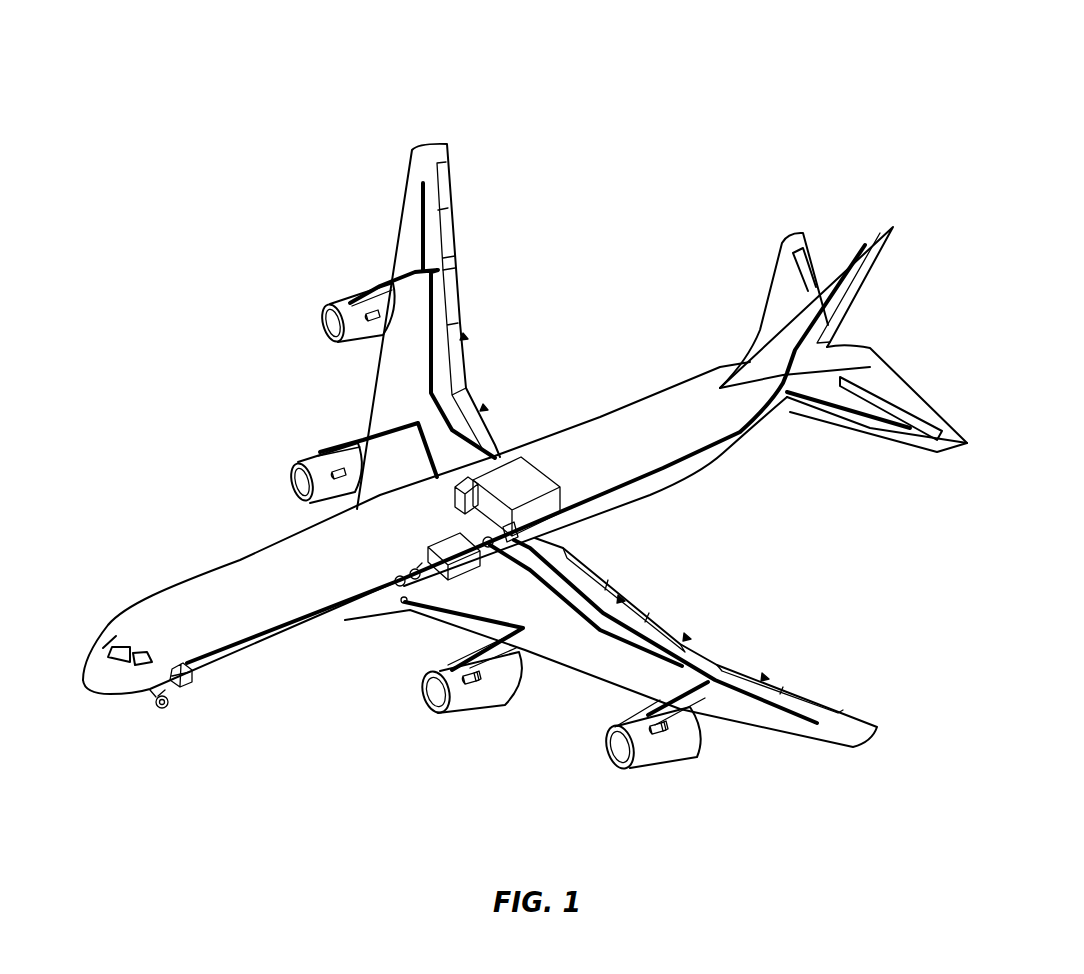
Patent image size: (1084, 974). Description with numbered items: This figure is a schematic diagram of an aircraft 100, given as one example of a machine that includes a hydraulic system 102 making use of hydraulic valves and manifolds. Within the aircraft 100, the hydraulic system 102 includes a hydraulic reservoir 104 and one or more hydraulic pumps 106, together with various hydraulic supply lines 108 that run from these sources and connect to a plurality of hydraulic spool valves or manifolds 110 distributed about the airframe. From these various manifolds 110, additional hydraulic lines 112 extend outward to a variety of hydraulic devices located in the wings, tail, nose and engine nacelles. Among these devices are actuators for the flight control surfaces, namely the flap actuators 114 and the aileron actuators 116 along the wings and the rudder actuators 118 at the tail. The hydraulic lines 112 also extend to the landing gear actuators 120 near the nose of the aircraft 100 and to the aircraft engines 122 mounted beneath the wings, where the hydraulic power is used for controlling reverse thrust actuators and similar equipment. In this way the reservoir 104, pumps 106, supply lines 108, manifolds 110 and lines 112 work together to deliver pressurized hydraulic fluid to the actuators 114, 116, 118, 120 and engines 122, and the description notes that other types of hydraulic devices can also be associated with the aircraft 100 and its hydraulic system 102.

The aircraft 100 is at (637, 165).
The hydraulic system 102 is at (521, 457).
The hydraulic reservoir 104 is at (428, 545).
The hydraulic pump 106 is at (568, 551).
The hydraulic supply line 108 is at (548, 453).
The hydraulic spool valve or manifold 110 is at (517, 524).
The hydraulic line 112 is at (427, 236).
The flap actuator 114 is at (467, 337).
The aileron actuator 116 is at (443, 186).
The rudder actuator 118 is at (848, 300).
The landing gear actuator 120 is at (183, 685).
The aircraft engine 122 is at (474, 680).